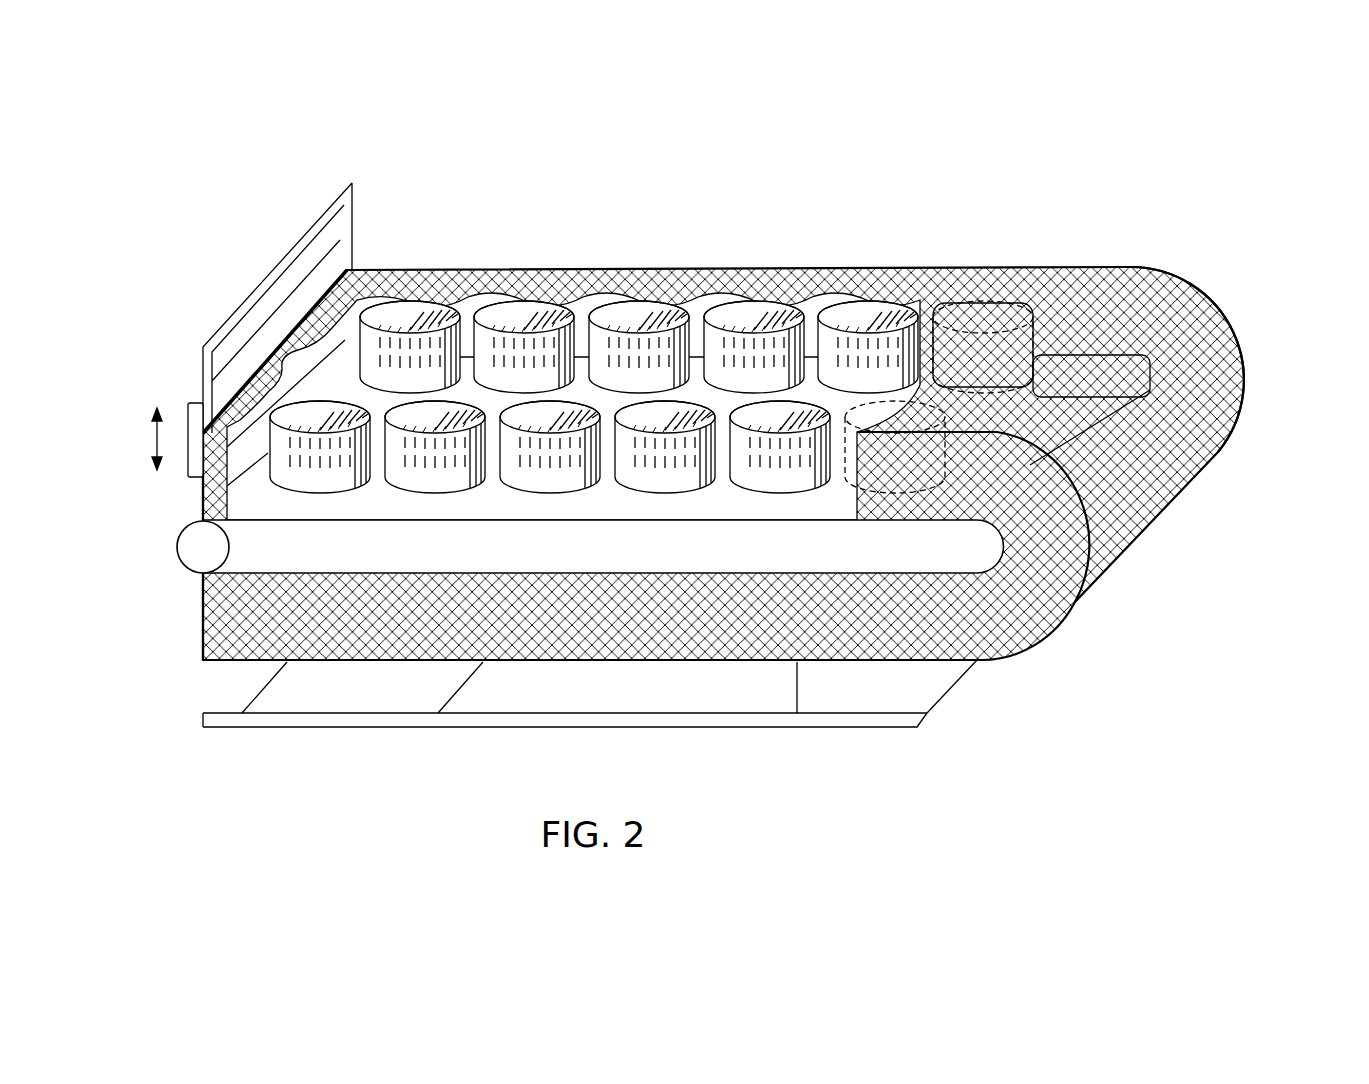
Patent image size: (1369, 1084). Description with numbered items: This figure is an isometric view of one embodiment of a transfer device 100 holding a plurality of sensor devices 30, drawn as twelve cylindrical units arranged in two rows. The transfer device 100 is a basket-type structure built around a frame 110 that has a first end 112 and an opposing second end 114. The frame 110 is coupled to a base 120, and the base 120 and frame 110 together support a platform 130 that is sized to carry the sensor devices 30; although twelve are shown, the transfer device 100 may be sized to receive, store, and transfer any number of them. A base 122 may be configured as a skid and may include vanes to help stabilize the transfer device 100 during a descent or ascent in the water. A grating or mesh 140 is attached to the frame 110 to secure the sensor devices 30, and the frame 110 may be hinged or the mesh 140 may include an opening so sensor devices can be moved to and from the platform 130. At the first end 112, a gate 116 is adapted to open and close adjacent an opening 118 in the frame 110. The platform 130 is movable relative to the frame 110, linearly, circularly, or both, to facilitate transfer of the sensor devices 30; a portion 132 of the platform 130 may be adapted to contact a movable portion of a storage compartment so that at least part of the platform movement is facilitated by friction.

The transfer device 100 is at (709, 464).
The frame 110 is at (709, 431).
The first end 112 is at (186, 494).
The second end 114 is at (1240, 327).
The gate 116 is at (199, 395).
The opening 118 is at (323, 377).
The base 120 is at (663, 724).
The base 122 is at (755, 727).
The platform 130 is at (539, 546).
The portion of the platform 132 is at (193, 550).
The grating or mesh 140 is at (918, 295).
The sensor devices 30 is at (547, 478).